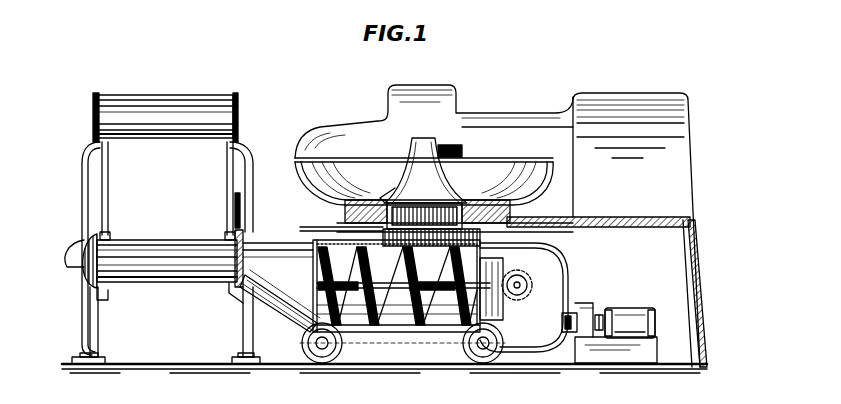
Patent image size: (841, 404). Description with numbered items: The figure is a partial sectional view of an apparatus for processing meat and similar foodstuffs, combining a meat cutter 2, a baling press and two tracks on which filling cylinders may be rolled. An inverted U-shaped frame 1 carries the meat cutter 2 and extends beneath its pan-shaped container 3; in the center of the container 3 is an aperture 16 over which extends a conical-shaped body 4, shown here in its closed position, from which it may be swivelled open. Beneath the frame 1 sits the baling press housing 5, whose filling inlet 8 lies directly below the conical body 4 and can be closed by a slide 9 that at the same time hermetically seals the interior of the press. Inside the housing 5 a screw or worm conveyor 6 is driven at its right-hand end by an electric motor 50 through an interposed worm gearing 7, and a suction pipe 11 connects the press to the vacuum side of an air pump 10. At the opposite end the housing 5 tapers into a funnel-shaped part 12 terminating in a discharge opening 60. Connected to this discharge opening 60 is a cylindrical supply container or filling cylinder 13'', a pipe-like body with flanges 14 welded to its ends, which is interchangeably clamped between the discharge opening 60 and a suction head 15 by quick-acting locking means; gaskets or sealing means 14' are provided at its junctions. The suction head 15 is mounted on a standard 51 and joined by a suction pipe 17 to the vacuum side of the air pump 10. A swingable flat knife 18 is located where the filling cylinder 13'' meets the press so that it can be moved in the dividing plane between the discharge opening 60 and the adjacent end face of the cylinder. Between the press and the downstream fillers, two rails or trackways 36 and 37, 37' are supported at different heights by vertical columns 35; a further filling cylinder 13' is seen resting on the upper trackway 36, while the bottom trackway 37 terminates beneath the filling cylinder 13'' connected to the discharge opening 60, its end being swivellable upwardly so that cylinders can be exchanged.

The frame 1 is at (697, 283).
The meat cutter 2 is at (676, 135).
The pan-shaped container 3 is at (533, 188).
The conical-shaped body 4 is at (450, 190).
The baling press housing 5 is at (403, 330).
The screw or worm conveyor 6 is at (395, 310).
The worm gearing 7 is at (510, 312).
The filling inlet 8 is at (434, 247).
The slide 9 is at (312, 228).
The air pump 10 is at (589, 303).
The suction pipe 11 is at (569, 266).
The funnel-shaped part 12 is at (284, 309).
The upper roller 13' is at (165, 106).
The cylindrical supply container 13'' is at (167, 269).
The flanges 14 is at (167, 227).
The gaskets or sealing means 14' is at (72, 242).
The suction head 15 is at (82, 247).
The aperture 16 is at (395, 190).
The suction pipe 17 is at (169, 349).
The swingable flat knife 18 is at (233, 198).
The vertical columns 35 is at (85, 167).
The rail or trackway 36 is at (134, 173).
The bottom trackway 37 is at (115, 297).
The bracket 37' is at (227, 302).
The electric motor 50 is at (562, 320).
The standard 51 is at (97, 328).
The discharge opening 60 is at (244, 236).